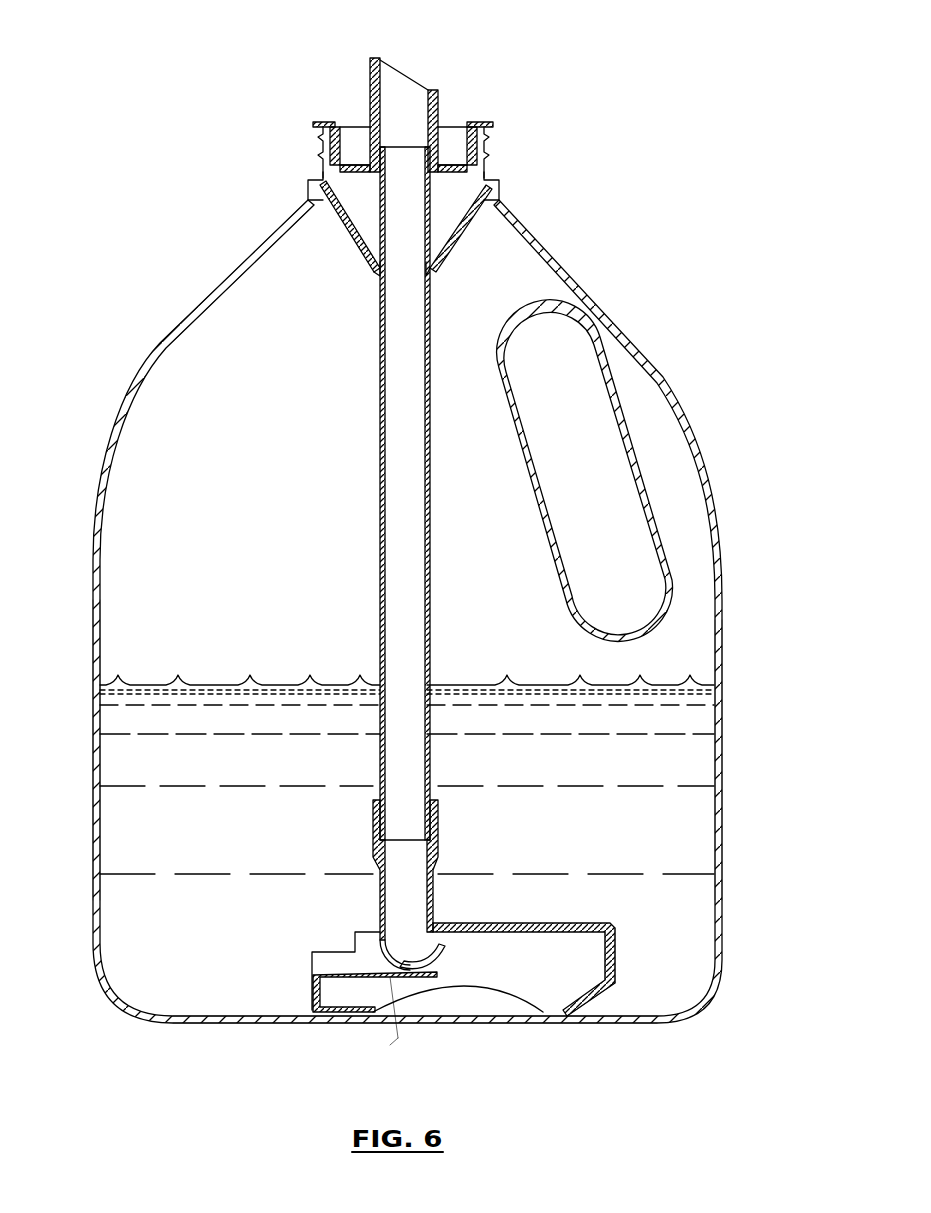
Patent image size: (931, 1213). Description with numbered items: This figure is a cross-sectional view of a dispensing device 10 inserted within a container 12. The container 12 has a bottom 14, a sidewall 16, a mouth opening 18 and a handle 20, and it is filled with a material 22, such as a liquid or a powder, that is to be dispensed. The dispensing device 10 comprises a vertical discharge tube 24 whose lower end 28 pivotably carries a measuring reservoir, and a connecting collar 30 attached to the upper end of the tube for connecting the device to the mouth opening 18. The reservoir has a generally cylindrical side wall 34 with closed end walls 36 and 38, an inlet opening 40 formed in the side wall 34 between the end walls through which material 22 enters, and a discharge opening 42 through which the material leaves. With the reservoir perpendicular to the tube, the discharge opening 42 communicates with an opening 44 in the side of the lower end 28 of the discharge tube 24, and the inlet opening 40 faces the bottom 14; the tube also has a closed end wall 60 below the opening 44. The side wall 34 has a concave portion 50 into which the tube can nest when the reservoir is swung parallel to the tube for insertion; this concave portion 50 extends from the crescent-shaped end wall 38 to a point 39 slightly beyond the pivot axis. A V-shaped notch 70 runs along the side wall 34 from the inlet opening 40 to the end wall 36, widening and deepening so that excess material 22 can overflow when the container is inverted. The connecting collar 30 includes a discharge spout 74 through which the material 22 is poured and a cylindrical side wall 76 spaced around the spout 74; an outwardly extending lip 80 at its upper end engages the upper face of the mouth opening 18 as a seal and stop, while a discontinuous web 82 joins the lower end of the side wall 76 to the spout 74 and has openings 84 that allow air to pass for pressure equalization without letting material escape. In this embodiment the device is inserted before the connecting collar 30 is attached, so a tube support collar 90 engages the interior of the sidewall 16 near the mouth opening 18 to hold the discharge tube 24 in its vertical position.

The dispensing device 10 is at (230, 570).
The container 12 is at (690, 336).
The bottom 14 is at (213, 1023).
The sidewall 16 is at (97, 590).
The mouth opening 18 is at (330, 235).
The handle 20 is at (667, 420).
The material 22 is at (560, 775).
The vertical discharge tube 24 is at (430, 495).
The lower end 28 is at (442, 845).
The connecting collar 30 is at (456, 92).
The side wall 34 is at (527, 923).
The end wall 36 is at (615, 950).
The end wall 38 is at (313, 992).
The point 39 is at (440, 960).
The inlet opening 40 is at (456, 1002).
The discharge opening 42 is at (458, 942).
The opening 44 is at (404, 936).
The concave portion 50 is at (333, 978).
The closed end wall 60 is at (390, 978).
The V-shaped notch 70 is at (600, 1000).
The discharge spout 74 is at (438, 95).
The cylindrical side wall 76 is at (319, 138).
The lip 80 is at (328, 123).
The discontinuous web 82 is at (308, 170).
The openings 84 is at (358, 160).
The tube support collar 90 is at (492, 205).